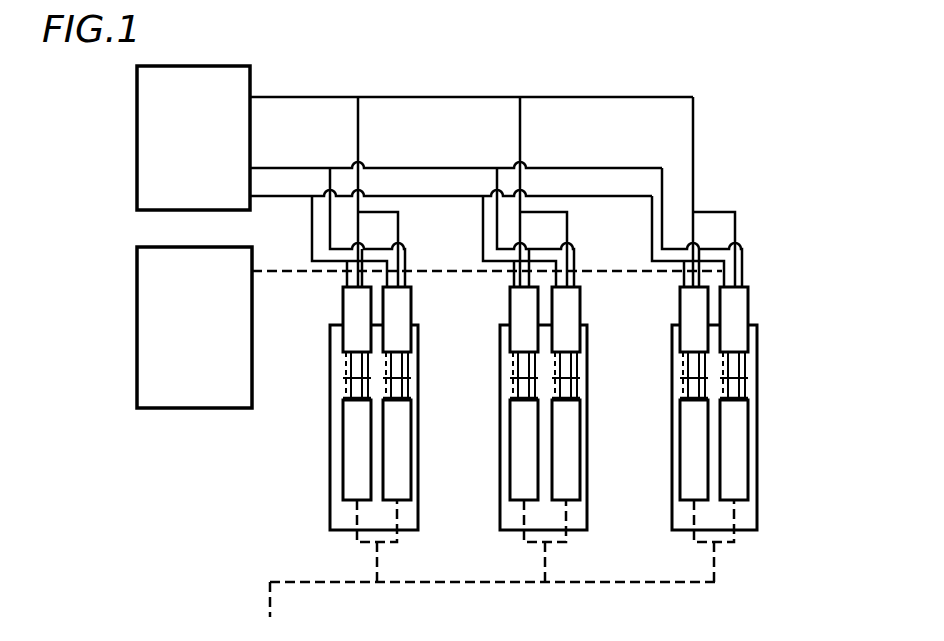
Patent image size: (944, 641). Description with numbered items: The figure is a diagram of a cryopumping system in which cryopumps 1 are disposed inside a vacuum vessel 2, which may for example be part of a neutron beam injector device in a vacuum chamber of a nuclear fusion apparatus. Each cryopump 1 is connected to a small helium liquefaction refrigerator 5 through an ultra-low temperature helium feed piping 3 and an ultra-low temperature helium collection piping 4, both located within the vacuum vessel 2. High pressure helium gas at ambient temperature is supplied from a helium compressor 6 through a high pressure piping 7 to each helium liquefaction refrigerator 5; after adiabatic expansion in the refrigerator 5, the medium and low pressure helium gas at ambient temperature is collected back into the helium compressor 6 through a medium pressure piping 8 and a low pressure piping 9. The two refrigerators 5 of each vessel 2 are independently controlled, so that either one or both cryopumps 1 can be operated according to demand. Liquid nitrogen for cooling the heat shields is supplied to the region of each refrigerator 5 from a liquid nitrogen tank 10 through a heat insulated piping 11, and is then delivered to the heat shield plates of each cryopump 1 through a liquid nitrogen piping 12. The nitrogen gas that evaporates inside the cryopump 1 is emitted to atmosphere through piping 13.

The cryopump 1 is at (347, 456).
The vacuum vessel 2 is at (330, 520).
The ultra-low temperature helium feed piping 3 is at (338, 365).
The ultra-low temperature helium collection piping 4 is at (350, 380).
The helium liquefaction refrigerator 5 is at (350, 297).
The helium compressor 6 is at (147, 113).
The high pressure piping 7 is at (420, 96).
The medium pressure piping 8 is at (447, 167).
The low pressure piping 9 is at (437, 198).
The liquid nitrogen tank 10 is at (148, 305).
The heat insulated piping 11 is at (272, 282).
The liquid nitrogen piping 12 is at (347, 393).
The piping 13 is at (392, 583).